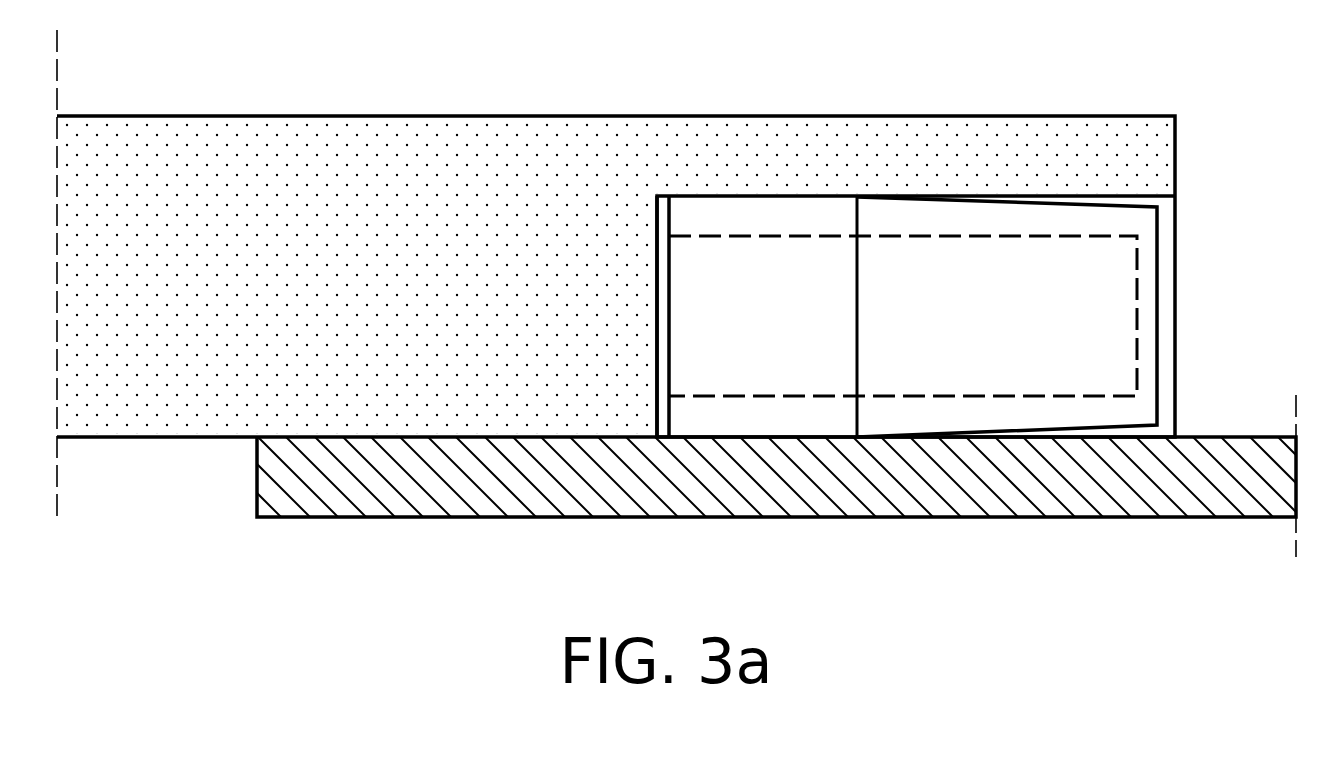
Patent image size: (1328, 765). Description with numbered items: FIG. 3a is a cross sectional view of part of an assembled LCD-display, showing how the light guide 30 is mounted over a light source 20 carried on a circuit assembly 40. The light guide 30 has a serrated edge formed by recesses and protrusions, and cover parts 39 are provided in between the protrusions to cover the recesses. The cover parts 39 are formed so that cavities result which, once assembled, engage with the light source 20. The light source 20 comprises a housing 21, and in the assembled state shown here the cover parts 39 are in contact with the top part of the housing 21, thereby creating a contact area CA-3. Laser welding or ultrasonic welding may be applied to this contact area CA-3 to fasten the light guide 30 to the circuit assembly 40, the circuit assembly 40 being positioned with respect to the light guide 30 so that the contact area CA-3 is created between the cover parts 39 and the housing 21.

The light guide 30 is at (260, 147).
The circuit assembly 40 is at (736, 505).
The contact area CA-3 is at (735, 195).
The cover parts 39 is at (855, 145).
The light source 20 is at (968, 230).
The housing 21 is at (1090, 220).